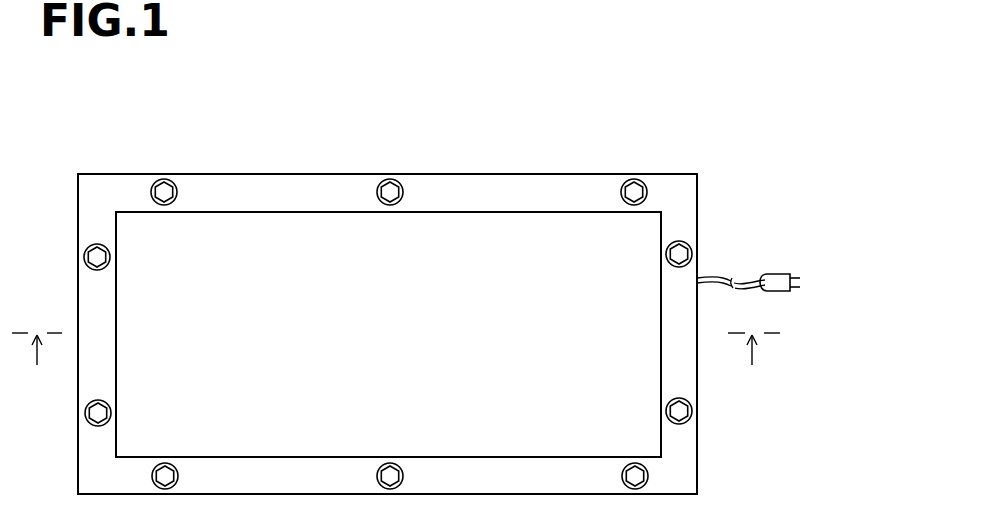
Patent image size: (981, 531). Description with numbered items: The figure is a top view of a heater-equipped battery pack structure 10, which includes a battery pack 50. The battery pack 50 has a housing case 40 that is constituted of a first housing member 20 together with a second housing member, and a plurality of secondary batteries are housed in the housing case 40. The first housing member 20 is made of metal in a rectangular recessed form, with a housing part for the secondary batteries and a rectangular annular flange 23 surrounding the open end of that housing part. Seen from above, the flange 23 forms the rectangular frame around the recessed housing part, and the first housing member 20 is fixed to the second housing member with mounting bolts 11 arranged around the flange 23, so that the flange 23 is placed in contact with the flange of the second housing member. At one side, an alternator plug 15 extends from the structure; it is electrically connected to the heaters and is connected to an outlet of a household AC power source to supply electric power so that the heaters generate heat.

The heater-equipped battery pack structure 10 is at (441, 107).
The battery pack 50 is at (417, 300).
The rectangular annular flange 23 is at (682, 468).
The housing case 40 is at (388, 290).
The first housing member 20 is at (562, 230).
The mounting bolts 11 is at (680, 254).
The alternator plug 15 is at (778, 276).